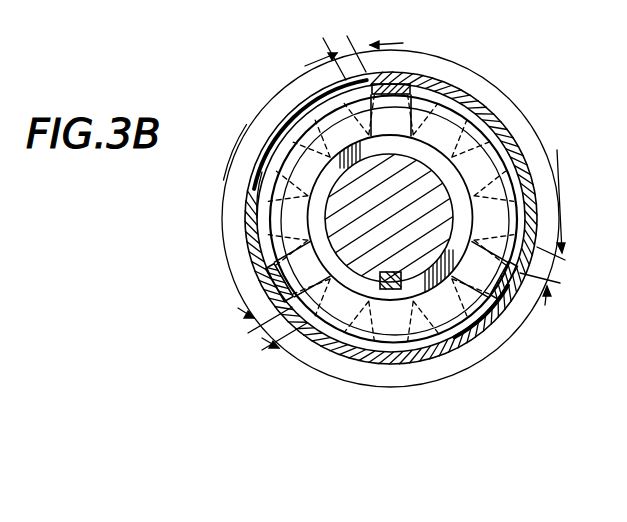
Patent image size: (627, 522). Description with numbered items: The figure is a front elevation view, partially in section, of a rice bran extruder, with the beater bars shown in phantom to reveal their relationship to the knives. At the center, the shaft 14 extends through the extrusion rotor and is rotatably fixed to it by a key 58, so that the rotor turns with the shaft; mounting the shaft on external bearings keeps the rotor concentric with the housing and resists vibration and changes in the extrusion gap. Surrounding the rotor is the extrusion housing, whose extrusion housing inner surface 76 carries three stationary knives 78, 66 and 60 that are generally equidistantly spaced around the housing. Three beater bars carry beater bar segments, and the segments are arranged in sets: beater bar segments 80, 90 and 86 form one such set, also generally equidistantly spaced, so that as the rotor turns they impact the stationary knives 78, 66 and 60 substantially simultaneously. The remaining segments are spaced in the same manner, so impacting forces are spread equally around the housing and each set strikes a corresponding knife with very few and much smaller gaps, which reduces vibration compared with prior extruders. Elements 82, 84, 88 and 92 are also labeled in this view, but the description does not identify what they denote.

The shaft 14 is at (455, 188).
The key 58 is at (402, 287).
The stationary knife 60 is at (268, 278).
The stationary knife 66 is at (515, 296).
The extrusion housing inner surface 76 is at (466, 103).
The stationary knife 78 is at (397, 84).
The beater bar segment 80 is at (345, 88).
The clearance gap 82 is at (246, 124).
The inner surface of outer race 84 is at (262, 172).
The beater bar segment 86 is at (278, 253).
The gap 88 is at (345, 362).
The beater bar segment 90 is at (484, 262).
The housing 92 is at (524, 112).